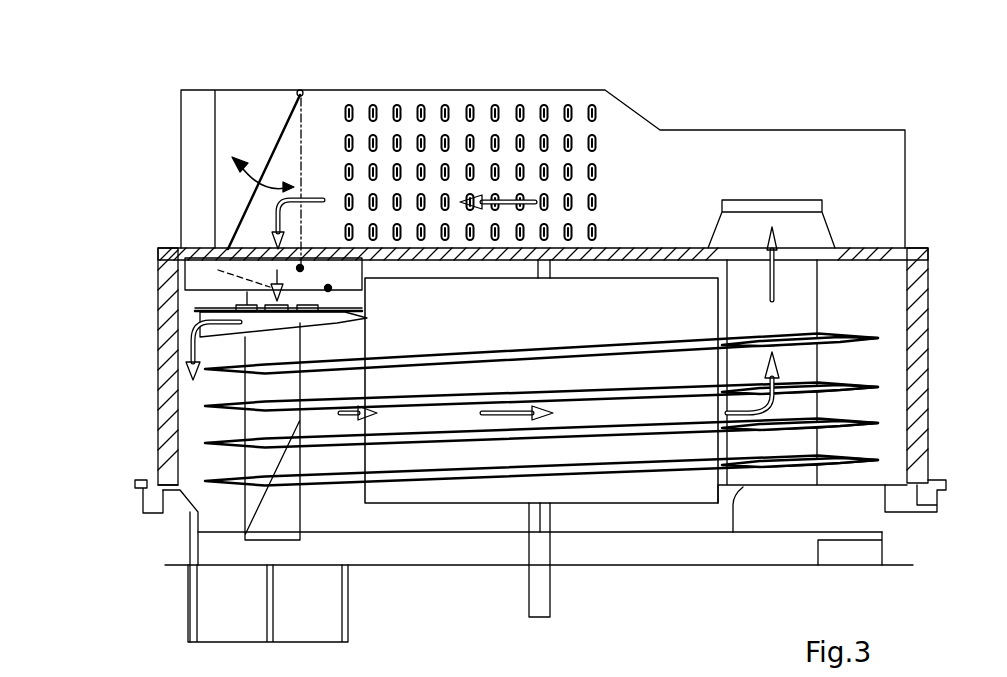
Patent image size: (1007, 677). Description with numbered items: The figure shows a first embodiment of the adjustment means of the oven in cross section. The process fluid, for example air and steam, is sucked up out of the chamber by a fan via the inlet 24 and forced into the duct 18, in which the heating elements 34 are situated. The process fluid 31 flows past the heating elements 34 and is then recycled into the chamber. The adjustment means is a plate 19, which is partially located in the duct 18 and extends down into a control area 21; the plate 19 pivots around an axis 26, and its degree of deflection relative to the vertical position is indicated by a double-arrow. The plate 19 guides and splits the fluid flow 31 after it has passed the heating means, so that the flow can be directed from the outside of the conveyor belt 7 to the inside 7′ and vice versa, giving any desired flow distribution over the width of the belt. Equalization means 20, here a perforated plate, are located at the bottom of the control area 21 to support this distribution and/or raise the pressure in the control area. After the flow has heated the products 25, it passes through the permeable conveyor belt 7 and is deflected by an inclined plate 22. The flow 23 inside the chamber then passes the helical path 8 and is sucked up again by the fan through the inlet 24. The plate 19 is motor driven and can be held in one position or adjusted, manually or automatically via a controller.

The conveyor belt 7 is at (830, 458).
The inside of belt 7′ is at (332, 318).
The helical path 8 is at (828, 332).
The duct 18 is at (718, 143).
The plate 19 is at (267, 163).
The equalization means 20 is at (328, 288).
The control area 21 is at (300, 268).
The inclined plate 22 is at (267, 333).
The fluid flow in chamber 23 is at (197, 360).
The inlet 24 is at (797, 223).
The products 25 is at (317, 303).
The axis 26 is at (301, 92).
The process fluid flow 31 is at (508, 202).
The heating elements 34 is at (528, 118).